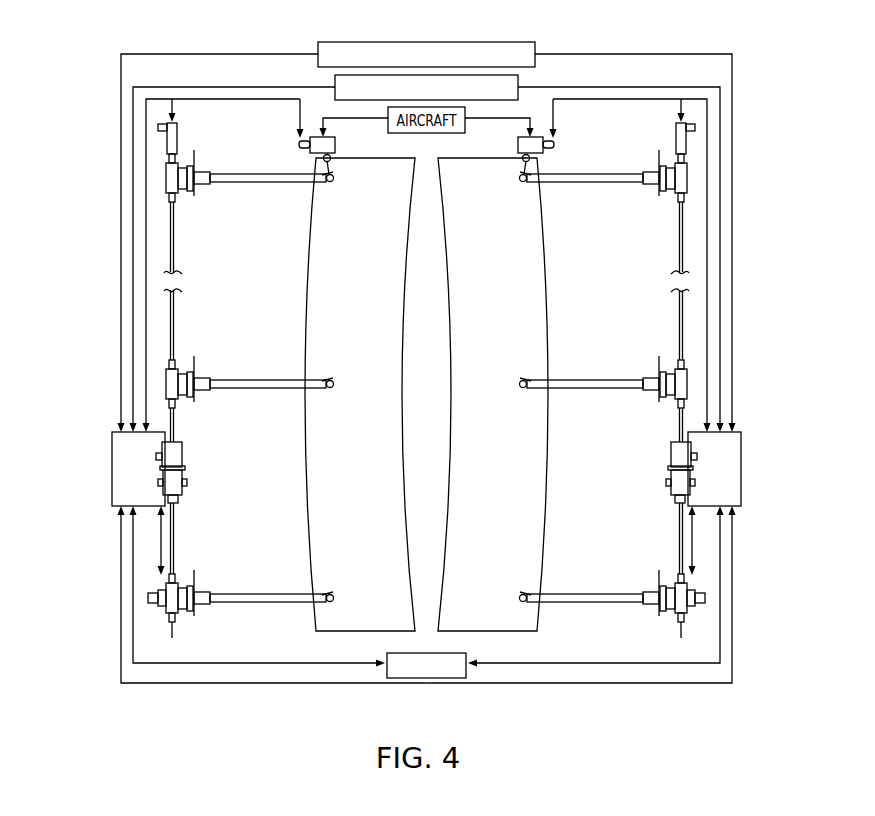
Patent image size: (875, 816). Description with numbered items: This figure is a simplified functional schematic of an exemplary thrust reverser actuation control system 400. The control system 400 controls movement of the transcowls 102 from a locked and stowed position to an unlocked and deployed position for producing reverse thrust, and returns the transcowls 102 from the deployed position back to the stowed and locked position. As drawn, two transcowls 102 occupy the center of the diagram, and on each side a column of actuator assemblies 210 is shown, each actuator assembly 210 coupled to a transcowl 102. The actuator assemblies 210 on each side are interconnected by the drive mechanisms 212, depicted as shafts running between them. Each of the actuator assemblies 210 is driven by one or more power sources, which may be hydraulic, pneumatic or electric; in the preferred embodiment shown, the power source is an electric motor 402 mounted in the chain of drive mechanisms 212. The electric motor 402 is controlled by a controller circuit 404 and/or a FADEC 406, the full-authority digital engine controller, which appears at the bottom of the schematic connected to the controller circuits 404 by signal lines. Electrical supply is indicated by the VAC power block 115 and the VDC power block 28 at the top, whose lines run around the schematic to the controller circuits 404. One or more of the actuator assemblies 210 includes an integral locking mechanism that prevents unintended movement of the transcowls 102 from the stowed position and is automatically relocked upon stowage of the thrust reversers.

The control system 400 is at (762, 97).
The VAC power source 115 is at (318, 48).
The VDC power source 28 is at (335, 80).
The FADEC 406 is at (428, 678).
The transcowl 102 is at (426, 394).
The actuator assembly 210 is at (426, 376).
The drive mechanism 212 is at (175, 555).
The electric motor 402 is at (184, 491).
The controller circuit 404 is at (112, 470).